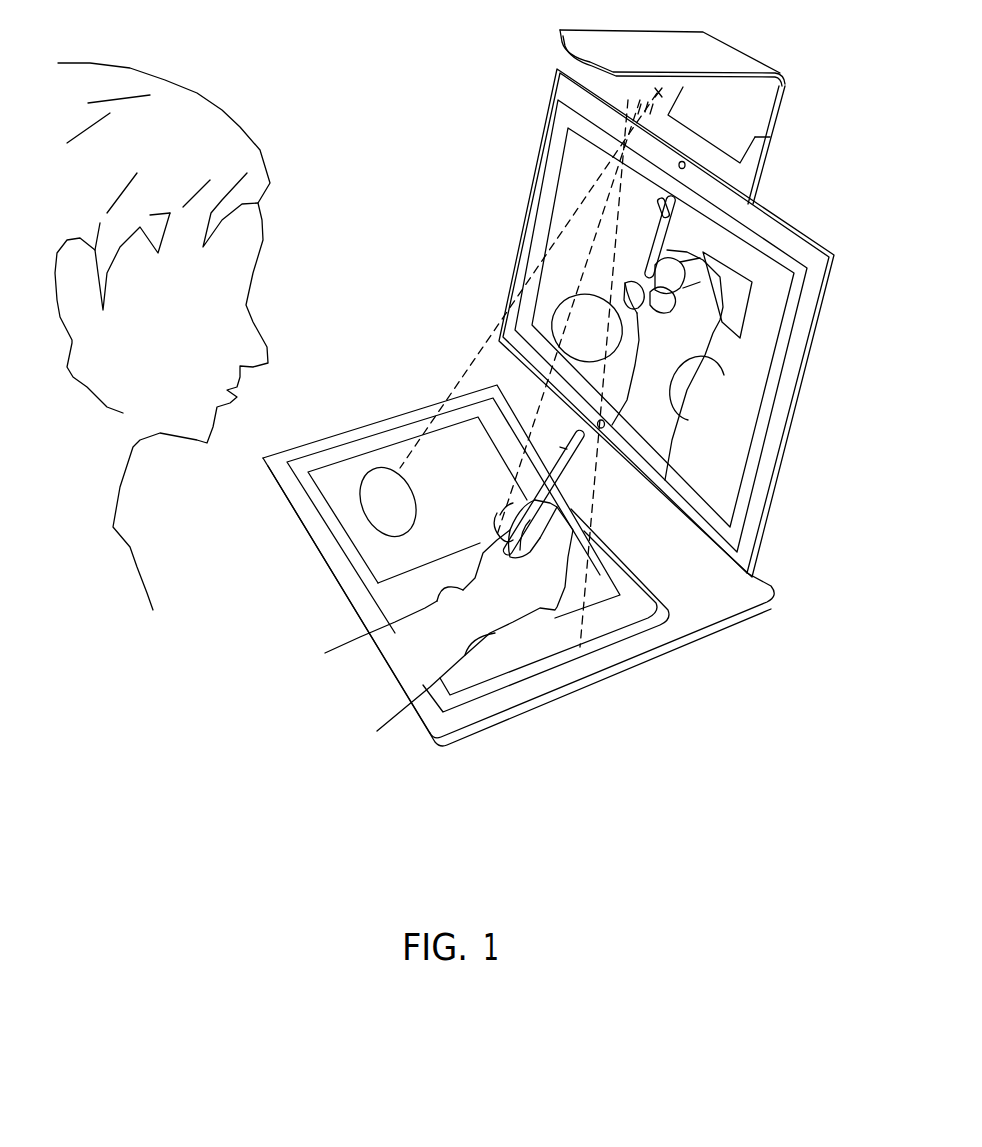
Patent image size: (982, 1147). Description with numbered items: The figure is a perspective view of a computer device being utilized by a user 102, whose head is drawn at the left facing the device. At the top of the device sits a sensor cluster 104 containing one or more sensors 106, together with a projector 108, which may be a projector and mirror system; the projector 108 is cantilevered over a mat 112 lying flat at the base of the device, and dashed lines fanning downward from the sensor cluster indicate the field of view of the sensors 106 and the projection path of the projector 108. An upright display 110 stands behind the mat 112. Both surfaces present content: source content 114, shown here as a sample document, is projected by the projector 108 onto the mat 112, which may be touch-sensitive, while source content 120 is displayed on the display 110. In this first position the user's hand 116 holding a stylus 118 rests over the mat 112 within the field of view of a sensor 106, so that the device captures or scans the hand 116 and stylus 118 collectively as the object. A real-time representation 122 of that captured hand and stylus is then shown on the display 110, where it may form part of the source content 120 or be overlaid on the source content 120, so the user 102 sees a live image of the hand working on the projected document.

The user 102 is at (200, 118).
The sensor cluster 104 is at (712, 48).
The sensors 106 is at (720, 82).
The projector 108 is at (653, 97).
The display 110 is at (793, 245).
The mat 112 is at (752, 595).
The source content 114 is at (353, 515).
The hand 116 is at (378, 705).
The stylus 118 is at (575, 430).
The source content 120 is at (748, 408).
The real-time representation 122 is at (693, 343).